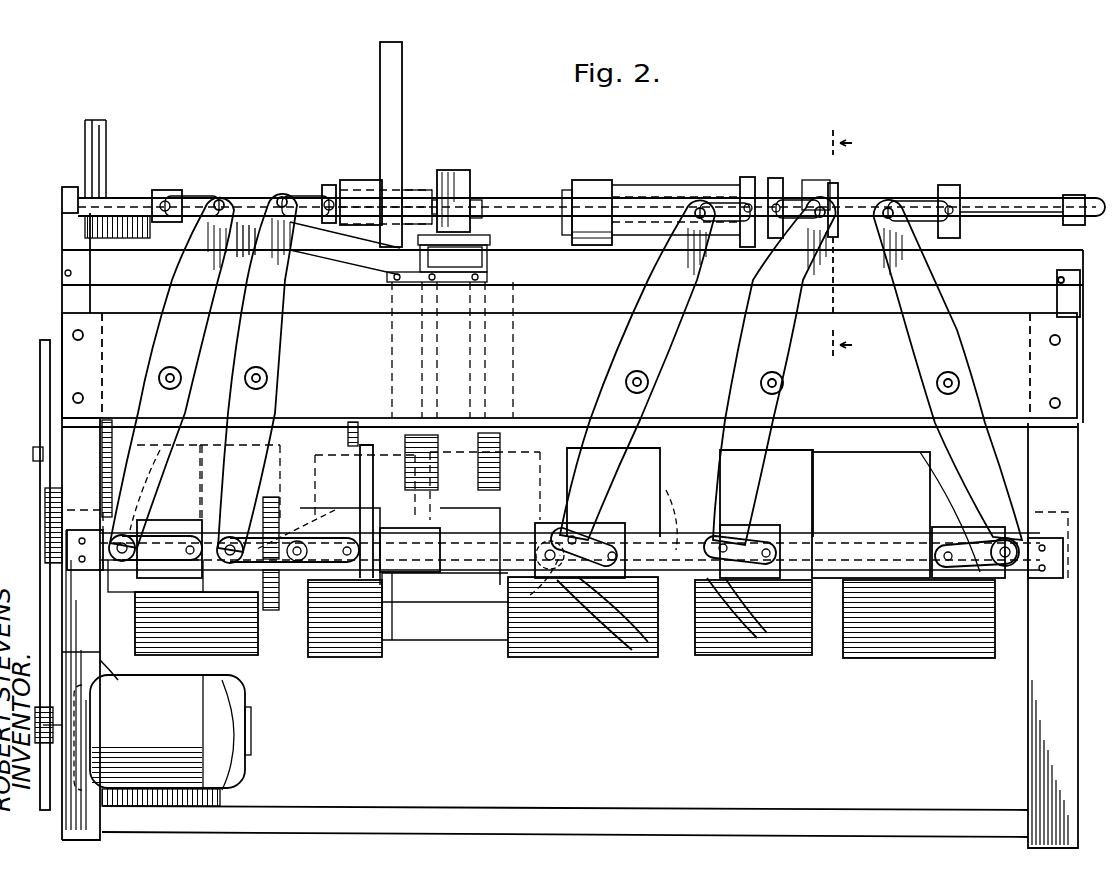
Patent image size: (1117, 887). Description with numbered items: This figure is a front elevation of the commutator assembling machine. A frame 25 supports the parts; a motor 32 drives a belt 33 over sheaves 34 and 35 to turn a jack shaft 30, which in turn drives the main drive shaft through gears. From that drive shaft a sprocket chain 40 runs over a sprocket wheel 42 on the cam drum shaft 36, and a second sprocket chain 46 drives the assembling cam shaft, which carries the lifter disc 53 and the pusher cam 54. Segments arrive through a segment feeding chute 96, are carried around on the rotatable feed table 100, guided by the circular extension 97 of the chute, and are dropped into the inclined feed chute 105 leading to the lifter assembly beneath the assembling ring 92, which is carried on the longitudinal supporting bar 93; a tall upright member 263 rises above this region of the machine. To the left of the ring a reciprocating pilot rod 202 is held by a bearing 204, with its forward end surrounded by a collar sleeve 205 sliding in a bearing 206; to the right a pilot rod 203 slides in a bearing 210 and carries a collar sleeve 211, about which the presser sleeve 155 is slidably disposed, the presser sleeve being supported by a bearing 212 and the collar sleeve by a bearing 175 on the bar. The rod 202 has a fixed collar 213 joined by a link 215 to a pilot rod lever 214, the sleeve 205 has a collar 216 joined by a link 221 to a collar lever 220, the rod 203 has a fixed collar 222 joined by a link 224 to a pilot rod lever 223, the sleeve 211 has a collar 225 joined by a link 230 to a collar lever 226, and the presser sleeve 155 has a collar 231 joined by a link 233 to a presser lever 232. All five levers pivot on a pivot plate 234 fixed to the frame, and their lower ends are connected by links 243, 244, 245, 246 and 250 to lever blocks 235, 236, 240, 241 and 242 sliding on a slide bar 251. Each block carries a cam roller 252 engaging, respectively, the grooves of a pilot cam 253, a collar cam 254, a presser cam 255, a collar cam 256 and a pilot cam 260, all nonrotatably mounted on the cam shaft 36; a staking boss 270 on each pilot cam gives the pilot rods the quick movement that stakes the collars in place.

The frame 25 is at (65, 275).
The jack shaft 30 is at (33, 452).
The motor 32 is at (172, 727).
The belt 33 is at (81, 654).
The sheave 34 is at (40, 372).
The sheave 35 is at (42, 745).
The cam drum shaft 36 is at (448, 570).
The sprocket chain 40 is at (270, 610).
The sprocket wheel 42 is at (275, 505).
The sprocket chain 46 is at (348, 435).
The lifter disc 53 is at (435, 470).
The pusher cam 54 is at (482, 488).
The assembling ring 92 is at (460, 175).
The supporting bar 93 is at (512, 262).
The segment feeding chute 96 is at (100, 145).
The circular extension 97 is at (88, 228).
The feed table 100 is at (219, 255).
The inclined feed chute 105 is at (345, 270).
The presser sleeve 155 is at (648, 196).
The bearing 175 is at (840, 182).
The pilot rod 202 is at (120, 198).
The pilot rod 203 is at (1040, 215).
The bearing 204 is at (70, 190).
The collar sleeve 205 is at (412, 192).
The bearing 206 is at (355, 180).
The bearing 210 is at (1072, 195).
The collar sleeve 211 is at (920, 200).
The bearing 212 is at (575, 188).
The fixed collar 213 is at (170, 198).
The pilot rod lever 214 is at (200, 356).
The link 215 is at (198, 200).
The collar 216 is at (328, 190).
The collar lever 220 is at (282, 356).
The link 221 is at (305, 198).
The fixed collar 222 is at (960, 192).
The pilot rod lever 223 is at (955, 356).
The link 224 is at (916, 262).
The collar 225 is at (778, 178).
The collar lever 226 is at (805, 360).
The link 230 is at (819, 184).
The collar 231 is at (746, 177).
The presser lever 232 is at (672, 356).
The link 233 is at (722, 205).
The pivot plate 234 is at (872, 420).
The lever block 235 is at (165, 520).
The lever block 236 is at (365, 532).
The lever block 240 is at (620, 530).
The lever block 241 is at (768, 528).
The lever block 242 is at (935, 540).
The link 243 is at (165, 540).
The link 244 is at (343, 562).
The link 245 is at (590, 535).
The link 246 is at (732, 538).
The link 250 is at (957, 545).
The slide bar 251 is at (860, 548).
The cam roller 252 is at (110, 618).
The pilot cam 253 is at (233, 655).
The collar cam 254 is at (360, 658).
The presser cam 255 is at (518, 658).
The collar cam 256 is at (790, 658).
The pilot cam 260 is at (888, 658).
The column 263 is at (398, 125).
The staking boss 270 is at (998, 658).